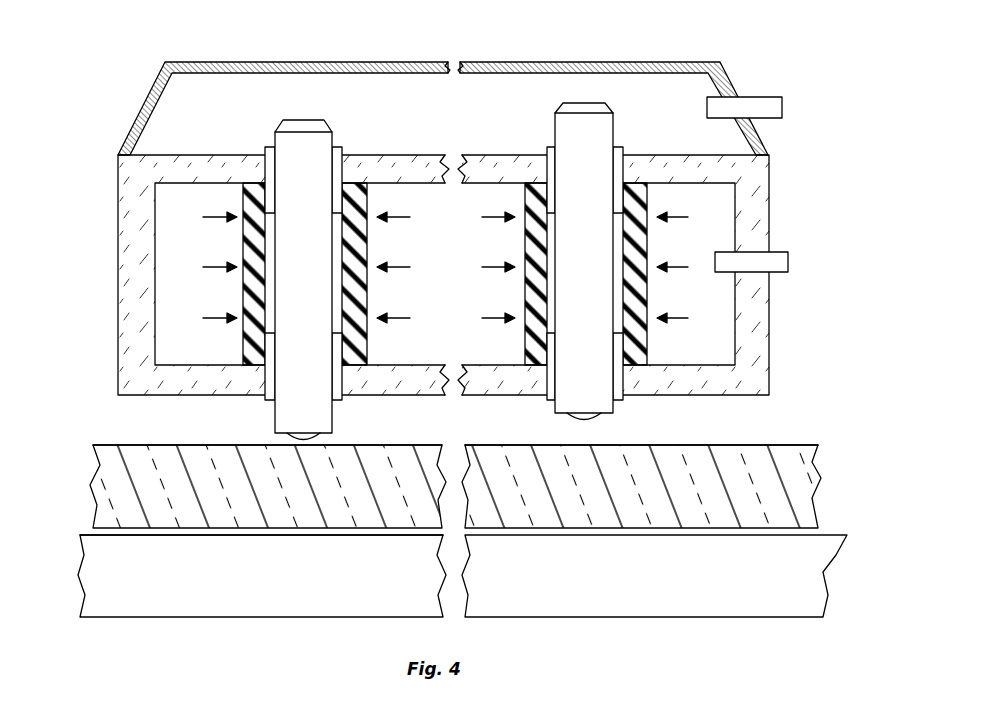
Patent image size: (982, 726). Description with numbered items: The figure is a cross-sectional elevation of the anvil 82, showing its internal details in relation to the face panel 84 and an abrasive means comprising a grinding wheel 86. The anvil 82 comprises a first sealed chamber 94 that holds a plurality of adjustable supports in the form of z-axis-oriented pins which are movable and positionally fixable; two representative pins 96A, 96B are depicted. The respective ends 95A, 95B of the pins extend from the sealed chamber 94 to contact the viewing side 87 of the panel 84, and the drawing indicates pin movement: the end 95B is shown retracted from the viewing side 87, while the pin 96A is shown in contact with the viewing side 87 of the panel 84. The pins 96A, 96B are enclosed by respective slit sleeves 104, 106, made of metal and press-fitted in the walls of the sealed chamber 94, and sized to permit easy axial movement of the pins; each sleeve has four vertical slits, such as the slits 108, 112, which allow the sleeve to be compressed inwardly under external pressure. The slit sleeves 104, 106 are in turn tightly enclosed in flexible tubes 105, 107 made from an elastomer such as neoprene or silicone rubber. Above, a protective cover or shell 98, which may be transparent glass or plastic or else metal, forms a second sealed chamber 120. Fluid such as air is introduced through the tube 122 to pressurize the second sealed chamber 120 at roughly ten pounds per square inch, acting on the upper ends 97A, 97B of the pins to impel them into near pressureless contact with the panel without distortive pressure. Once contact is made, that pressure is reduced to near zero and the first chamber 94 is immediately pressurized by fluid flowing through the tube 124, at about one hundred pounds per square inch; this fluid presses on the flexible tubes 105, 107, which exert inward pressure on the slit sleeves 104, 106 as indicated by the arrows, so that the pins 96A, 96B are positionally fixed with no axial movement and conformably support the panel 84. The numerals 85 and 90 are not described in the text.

The anvil 82 is at (812, 149).
The face panel 84 is at (818, 476).
The lower board surface 85 is at (118, 532).
The grinding wheel 86 is at (833, 572).
The viewing side 87 is at (783, 447).
The gap between boards 90 is at (889, 488).
The first sealed chamber 94 is at (465, 276).
The end of pin 95A is at (298, 441).
The end of pin 95B is at (586, 424).
The pin 96A is at (287, 145).
The pin 96B is at (570, 127).
The end of pin 97A is at (308, 147).
The end of pin 97B is at (588, 103).
The shell 98 is at (700, 62).
The slit sleeve 104 is at (339, 147).
The flexible tube 105 is at (243, 237).
The slit sleeve 106 is at (619, 147).
The flexible tube 107 is at (640, 353).
The slit 108 is at (272, 292).
The slit 112 is at (342, 298).
The second sealed chamber 120 is at (476, 131).
The tube 122 is at (757, 97).
The tube 124 is at (781, 252).